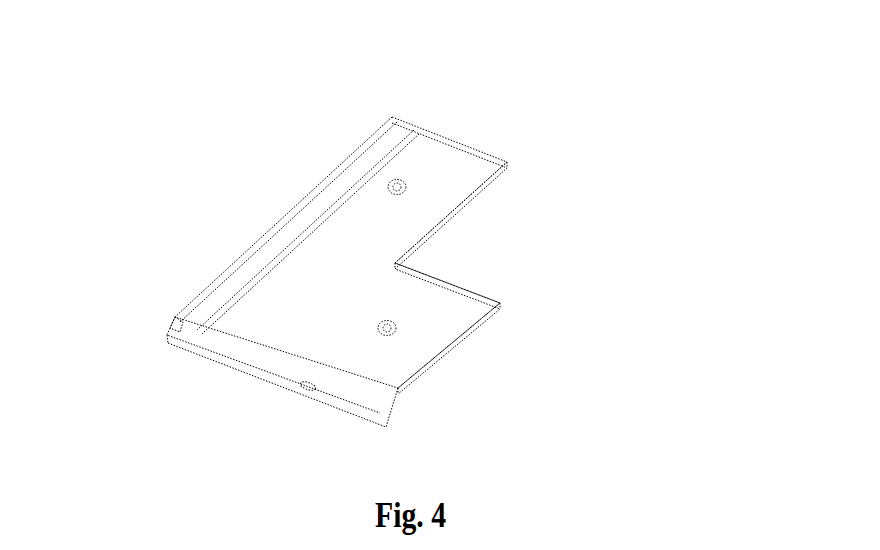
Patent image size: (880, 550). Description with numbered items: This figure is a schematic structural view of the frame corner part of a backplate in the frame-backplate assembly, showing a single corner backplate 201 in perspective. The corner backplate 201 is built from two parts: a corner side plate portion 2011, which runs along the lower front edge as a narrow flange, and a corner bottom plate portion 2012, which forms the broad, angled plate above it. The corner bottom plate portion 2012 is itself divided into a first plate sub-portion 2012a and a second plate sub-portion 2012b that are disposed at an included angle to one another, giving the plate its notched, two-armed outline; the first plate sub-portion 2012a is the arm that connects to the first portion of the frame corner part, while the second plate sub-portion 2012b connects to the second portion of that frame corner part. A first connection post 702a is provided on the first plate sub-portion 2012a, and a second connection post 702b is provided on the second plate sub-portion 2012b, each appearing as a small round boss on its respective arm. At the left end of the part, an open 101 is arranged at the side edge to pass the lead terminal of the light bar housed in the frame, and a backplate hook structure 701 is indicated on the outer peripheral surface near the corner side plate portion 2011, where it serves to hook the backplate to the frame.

The corner backplate 201 is at (472, 146).
The corner bottom plate portion 2012 is at (580, 275).
The first plate sub-portion 2012a is at (450, 323).
The second plate sub-portion 2012b is at (440, 195).
The corner side plate portion 2011 is at (227, 396).
The backplate hook structure 701 is at (305, 388).
The first connection post 702a is at (383, 330).
The second connection post 702b is at (393, 183).
The open 101 is at (168, 323).